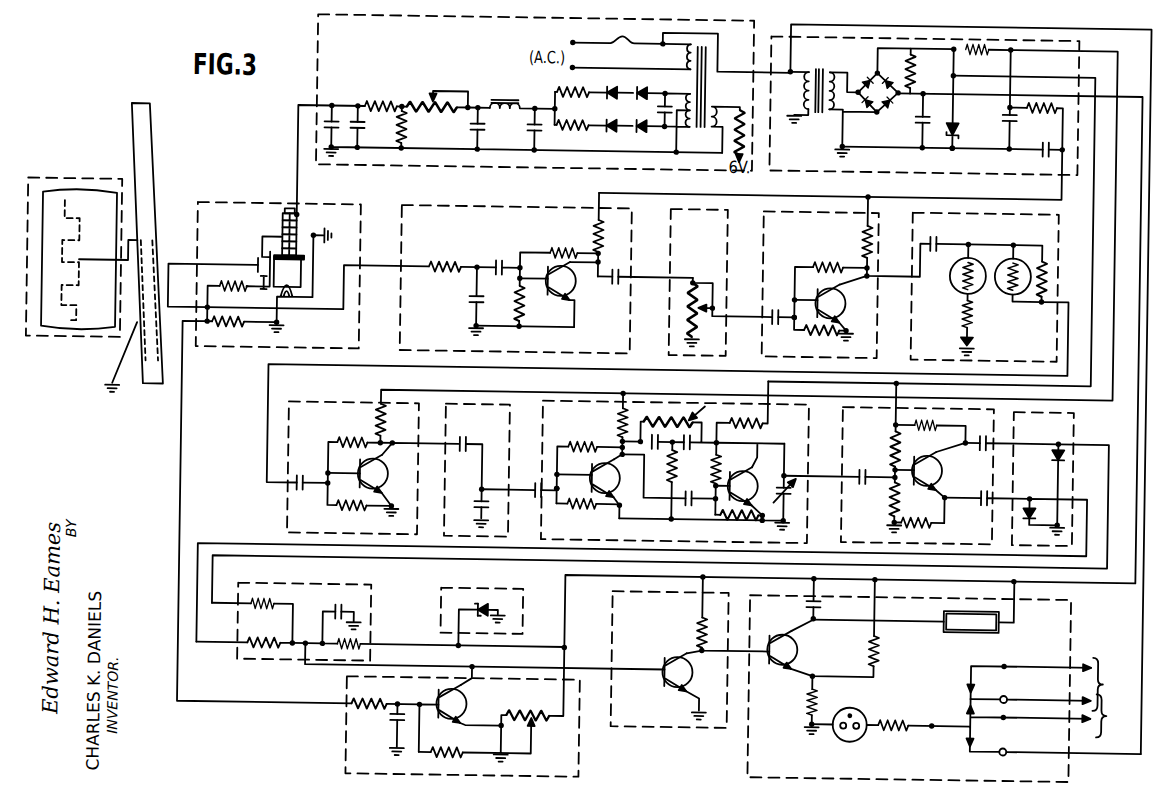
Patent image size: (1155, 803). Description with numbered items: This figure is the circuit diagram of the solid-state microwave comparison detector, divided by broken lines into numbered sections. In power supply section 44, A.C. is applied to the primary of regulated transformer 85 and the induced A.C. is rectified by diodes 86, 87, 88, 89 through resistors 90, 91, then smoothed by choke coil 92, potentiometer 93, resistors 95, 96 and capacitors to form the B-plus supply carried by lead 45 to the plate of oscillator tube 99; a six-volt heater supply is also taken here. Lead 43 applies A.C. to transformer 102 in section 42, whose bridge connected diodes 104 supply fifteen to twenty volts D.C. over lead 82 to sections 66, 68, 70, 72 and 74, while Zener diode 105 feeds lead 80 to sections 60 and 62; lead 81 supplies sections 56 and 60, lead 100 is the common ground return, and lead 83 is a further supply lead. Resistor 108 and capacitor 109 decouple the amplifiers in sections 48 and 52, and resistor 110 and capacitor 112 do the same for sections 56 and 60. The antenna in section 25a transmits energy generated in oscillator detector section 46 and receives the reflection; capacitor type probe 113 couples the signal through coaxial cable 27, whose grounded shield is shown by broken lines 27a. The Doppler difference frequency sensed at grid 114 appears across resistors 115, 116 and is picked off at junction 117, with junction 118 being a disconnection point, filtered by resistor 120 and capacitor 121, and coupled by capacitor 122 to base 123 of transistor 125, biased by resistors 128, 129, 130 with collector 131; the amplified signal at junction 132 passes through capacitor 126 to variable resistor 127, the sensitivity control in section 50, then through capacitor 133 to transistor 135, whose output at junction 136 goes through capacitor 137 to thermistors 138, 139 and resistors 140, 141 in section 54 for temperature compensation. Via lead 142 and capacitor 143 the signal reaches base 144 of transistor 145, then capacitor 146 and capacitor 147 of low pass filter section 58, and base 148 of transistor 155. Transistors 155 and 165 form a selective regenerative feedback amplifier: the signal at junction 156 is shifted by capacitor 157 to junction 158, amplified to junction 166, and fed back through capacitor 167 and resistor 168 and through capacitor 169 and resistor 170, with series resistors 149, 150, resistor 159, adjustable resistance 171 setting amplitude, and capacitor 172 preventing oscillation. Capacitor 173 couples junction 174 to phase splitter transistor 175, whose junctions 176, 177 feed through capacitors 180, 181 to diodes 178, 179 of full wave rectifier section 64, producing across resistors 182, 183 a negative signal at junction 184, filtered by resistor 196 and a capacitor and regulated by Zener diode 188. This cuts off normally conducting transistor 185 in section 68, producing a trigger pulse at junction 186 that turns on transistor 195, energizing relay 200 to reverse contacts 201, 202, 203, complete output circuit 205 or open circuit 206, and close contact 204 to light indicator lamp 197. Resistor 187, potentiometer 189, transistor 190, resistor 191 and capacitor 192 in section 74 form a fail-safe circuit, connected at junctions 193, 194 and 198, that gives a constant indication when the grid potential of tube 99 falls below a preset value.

The antenna section 25a is at (76, 185).
The coaxial cable 27 is at (148, 152).
The grounded coaxial shield 27a is at (128, 340).
The power supply 42 is at (808, 60).
The lead 43 is at (760, 70).
The power supply section 44 is at (343, 48).
The lead 45 is at (294, 206).
The oscillator detector section 46 is at (222, 232).
The amplifier section 48 is at (426, 231).
The sensitivity control section 50 is at (692, 236).
The amplifier section 52 is at (785, 233).
The temperature compensating section 54 is at (931, 231).
The third amplifier section 56 is at (315, 427).
The low pass filter section 58 is at (470, 427).
The selective feedback amplifier section 60 is at (565, 427).
The phase splitter section 62 is at (868, 427).
The full wave rectifier section 64 is at (1039, 429).
The filter network section 66 is at (263, 610).
The trigger section 68 is at (638, 612).
The relay output section 70 is at (777, 612).
The circuit section 72 is at (466, 612).
The fail-safe circuit section 74 is at (372, 705).
The lead 80 is at (1064, 71).
The lead 81 is at (1114, 54).
The lead 82 is at (1136, 96).
The supply bus 83 is at (998, 199).
The regulated transformer 85 is at (701, 86).
The diode 86 is at (608, 94).
The diode 87 is at (645, 88).
The diode 88 is at (606, 127).
The diode 89 is at (642, 119).
The resistor 90 is at (566, 92).
The resistor 91 is at (570, 129).
The choke coil 92 is at (518, 101).
The potentiometer 93 is at (430, 98).
The resistor 95 is at (390, 106).
The resistor 96 is at (401, 126).
The oscillator tube 99 is at (279, 232).
The ground return lead 100 is at (903, 144).
The transformer 102 is at (806, 110).
The bridge connected diodes 104 is at (886, 64).
The Zener diode 105 is at (952, 120).
The resistor 108 is at (1040, 100).
The capacitor 109 is at (1044, 141).
The resistor 110 is at (984, 45).
The capacitor 112 is at (1004, 118).
The capacitor type probe 113 is at (255, 266).
The grid 114 is at (247, 289).
The resistor 115 is at (258, 292).
The resistor 116 is at (244, 330).
The junction 117 is at (204, 313).
The junction 118 is at (206, 331).
The resistor 120 is at (432, 268).
The capacitor 121 is at (472, 304).
The coupling capacitor 122 is at (505, 260).
The base 123 is at (517, 280).
The transistor 125 is at (567, 303).
The coupling capacitor 126 is at (613, 285).
The variable resistor 127 is at (688, 308).
The resistor 128 is at (595, 228).
The resistor 129 is at (570, 244).
The resistor 130 is at (516, 311).
The collector 131 is at (570, 271).
The junction 132 is at (598, 263).
The coupling capacitor 133 is at (770, 306).
The transistor 135 is at (840, 306).
The junction 136 is at (868, 270).
The coupling capacitor 137 is at (938, 241).
The thermistor 138 is at (950, 278).
The thermistor 139 is at (1009, 292).
The resistor 140 is at (962, 320).
The resistor 141 is at (1044, 272).
The input line 142 is at (1066, 340).
The coupling capacitor 143 is at (301, 494).
The base 144 is at (327, 476).
The transistor 145 is at (389, 477).
The capacitor 146 is at (465, 454).
The capacitor 147 is at (481, 505).
The base junction 148 is at (537, 484).
The resistor 149 is at (596, 445).
The resistor 150 is at (595, 509).
The transistor 155 is at (592, 490).
The junction 156 is at (592, 474).
The capacitor 157 is at (702, 507).
The junction 158 is at (714, 484).
The resistor 159 is at (745, 516).
The transistor 165 is at (756, 471).
The junction 166 is at (768, 422).
The capacitor 167 is at (675, 451).
The resistor 168 is at (647, 497).
The capacitor 169 is at (617, 464).
The resistor 170 is at (621, 420).
The adjustable resistance 171 is at (690, 410).
The capacitor 172 is at (795, 490).
The coupling capacitor 173 is at (864, 480).
The junction 174 is at (893, 455).
The transistor 175 is at (942, 467).
The junction 176 is at (964, 438).
The junction 177 is at (944, 494).
The diode 178 is at (1055, 448).
The diode 179 is at (1034, 499).
The capacitor 180 is at (985, 428).
The capacitor 181 is at (985, 497).
The resistor 182 is at (277, 611).
The resistor 183 is at (262, 651).
The junction 184 is at (309, 645).
The transistor 185 is at (675, 682).
The junction 186 is at (701, 632).
The resistor 187 is at (378, 709).
The Zener diode 188 is at (496, 600).
The potentiometer 189 is at (553, 716).
The transistor 190 is at (471, 704).
The resistor 191 is at (471, 752).
The capacitor 192 is at (398, 735).
The junction 193 is at (478, 660).
The junction 194 is at (570, 648).
The transistor 195 is at (808, 652).
The resistor 196 is at (362, 644).
The indicator lamp 197 is at (860, 705).
The junction 198 is at (423, 706).
The relay 200 is at (913, 606).
The relay contact 201 is at (972, 680).
The relay contact 202 is at (972, 694).
The relay contact 203 is at (972, 710).
The relay contact 204 is at (972, 744).
The output circuit 205 is at (1111, 685).
The circuit 206 is at (1118, 716).